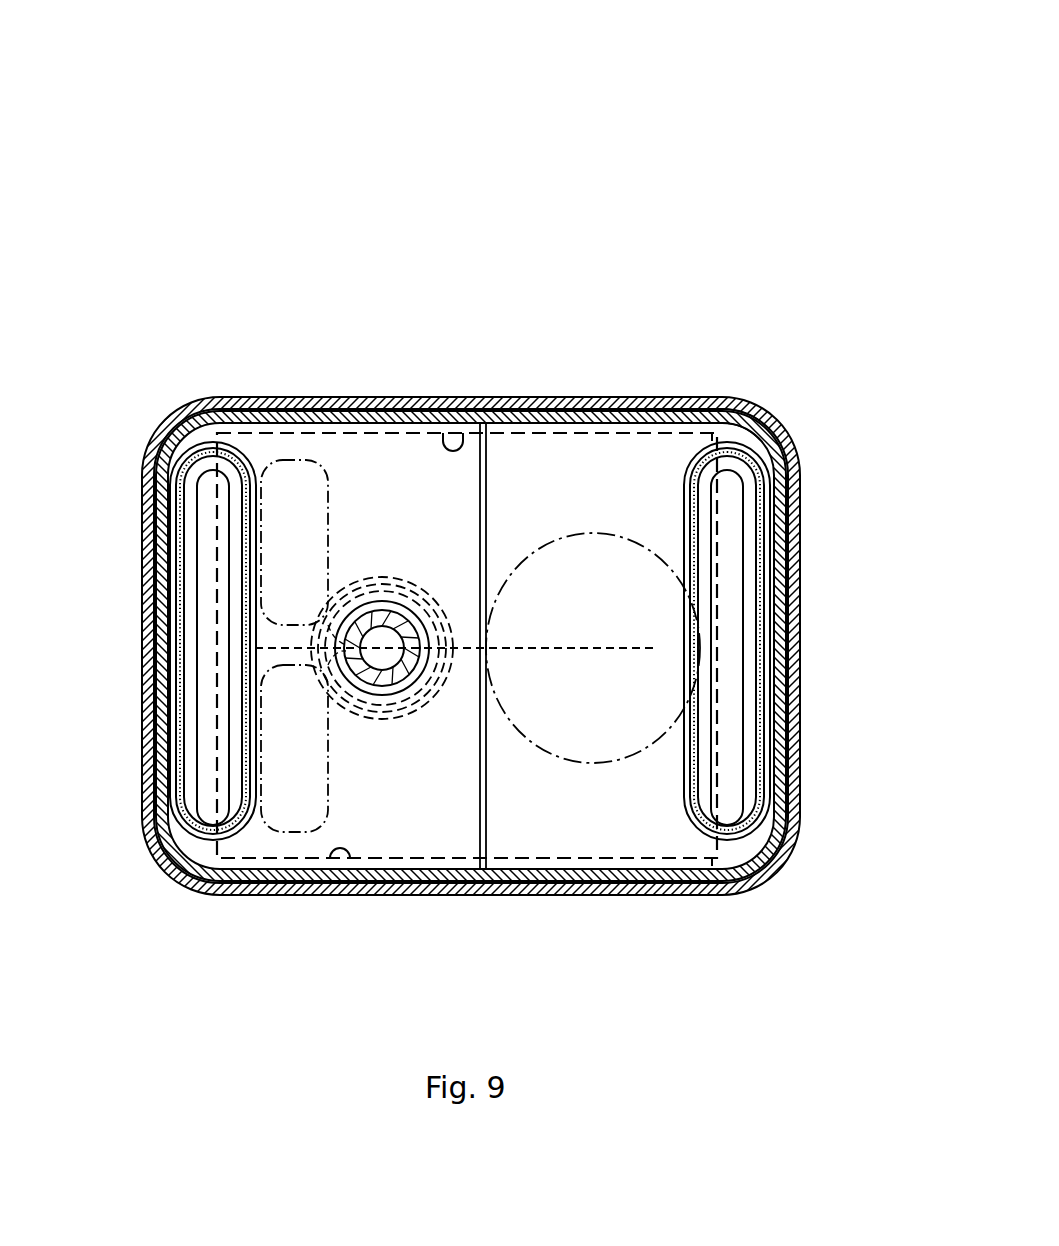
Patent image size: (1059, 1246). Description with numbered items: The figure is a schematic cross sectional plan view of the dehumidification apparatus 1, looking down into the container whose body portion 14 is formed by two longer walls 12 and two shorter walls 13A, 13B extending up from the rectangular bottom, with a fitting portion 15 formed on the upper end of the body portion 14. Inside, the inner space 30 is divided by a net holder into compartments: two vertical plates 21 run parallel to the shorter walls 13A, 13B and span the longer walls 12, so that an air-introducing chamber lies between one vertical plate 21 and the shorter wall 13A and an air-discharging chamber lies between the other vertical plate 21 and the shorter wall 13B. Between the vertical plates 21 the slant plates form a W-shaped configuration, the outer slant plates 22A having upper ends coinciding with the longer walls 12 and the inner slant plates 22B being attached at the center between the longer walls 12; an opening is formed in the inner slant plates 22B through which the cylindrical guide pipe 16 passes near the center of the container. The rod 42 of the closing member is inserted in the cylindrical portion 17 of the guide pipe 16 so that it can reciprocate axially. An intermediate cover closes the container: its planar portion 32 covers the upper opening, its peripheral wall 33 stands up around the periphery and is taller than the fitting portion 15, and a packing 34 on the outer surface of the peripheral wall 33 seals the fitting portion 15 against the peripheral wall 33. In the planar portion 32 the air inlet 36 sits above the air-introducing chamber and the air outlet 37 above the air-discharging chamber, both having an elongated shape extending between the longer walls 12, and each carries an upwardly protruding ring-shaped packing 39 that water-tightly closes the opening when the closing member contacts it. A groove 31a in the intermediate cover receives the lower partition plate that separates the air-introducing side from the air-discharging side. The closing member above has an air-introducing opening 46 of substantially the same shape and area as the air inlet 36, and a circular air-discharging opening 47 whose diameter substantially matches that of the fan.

The dehumidification apparatus 1 is at (667, 126).
The body portion 14 is at (680, 254).
The longer walls 12 is at (598, 397).
The shorter wall 13A is at (143, 740).
The shorter wall 13B is at (797, 753).
The fitting portion 15 is at (797, 463).
The guide pipe 16 is at (440, 590).
The cylindrical portion 17 is at (378, 612).
The vertical plates 21 is at (237, 780).
The outer slant plates 22A is at (443, 427).
The inner slant plates 22B is at (642, 647).
The inner space 30 is at (643, 822).
The groove 31a is at (478, 842).
The planar portion 32 is at (532, 450).
The peripheral wall 33 is at (762, 417).
The packing 34 is at (793, 440).
The air inlet 36 is at (190, 637).
The air outlet 37 is at (741, 724).
The ring-shaped packing 39 is at (177, 567).
The rod 42 is at (388, 690).
The air-introducing opening 46 is at (285, 447).
The air-discharging opening 47 is at (565, 747).